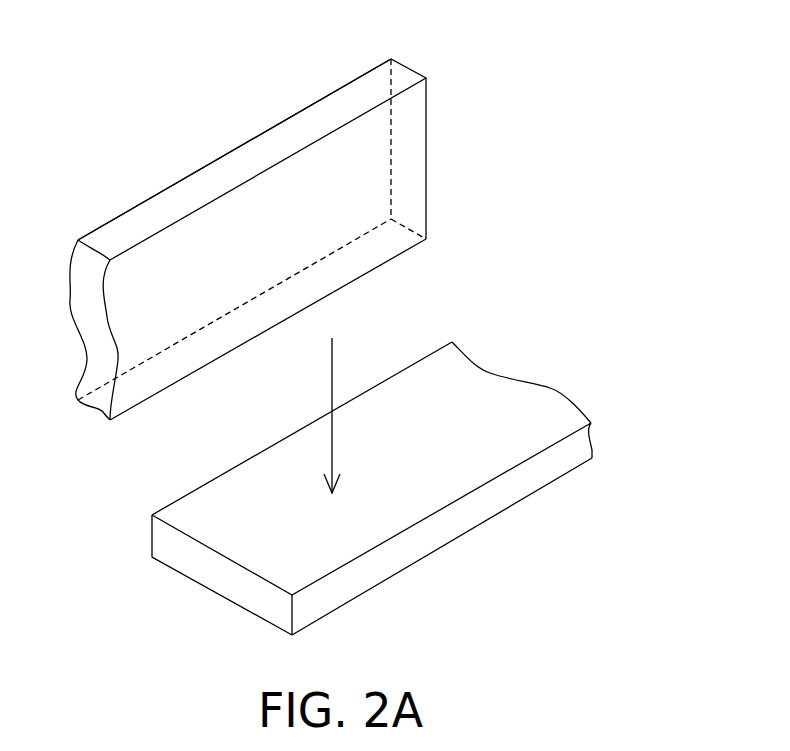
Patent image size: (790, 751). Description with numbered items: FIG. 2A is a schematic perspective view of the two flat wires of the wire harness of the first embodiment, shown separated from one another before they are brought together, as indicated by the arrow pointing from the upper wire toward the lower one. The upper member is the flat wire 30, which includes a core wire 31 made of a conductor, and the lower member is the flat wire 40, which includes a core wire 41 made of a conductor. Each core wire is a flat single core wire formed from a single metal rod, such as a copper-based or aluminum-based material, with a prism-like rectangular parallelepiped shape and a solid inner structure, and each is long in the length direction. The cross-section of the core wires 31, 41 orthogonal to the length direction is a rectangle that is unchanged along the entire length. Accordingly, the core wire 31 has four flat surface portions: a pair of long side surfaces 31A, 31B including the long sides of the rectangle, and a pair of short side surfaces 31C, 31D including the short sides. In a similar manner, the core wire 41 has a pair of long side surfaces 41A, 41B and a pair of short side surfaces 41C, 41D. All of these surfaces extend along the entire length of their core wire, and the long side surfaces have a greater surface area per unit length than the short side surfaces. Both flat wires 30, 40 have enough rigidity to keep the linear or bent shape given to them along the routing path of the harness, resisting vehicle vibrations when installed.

The flat wire 30 is at (290, 221).
The core wire 31 is at (286, 244).
The long side surface 31A is at (408, 150).
The long side surface 31B is at (235, 147).
The short side surface 31C is at (204, 368).
The short side surface 31D is at (322, 111).
The flat wire 40 is at (416, 457).
The core wire 41 is at (372, 457).
The long side surface 41A is at (493, 389).
The long side surface 41B is at (543, 493).
The short side surface 41C is at (425, 539).
The short side surface 41D is at (436, 349).